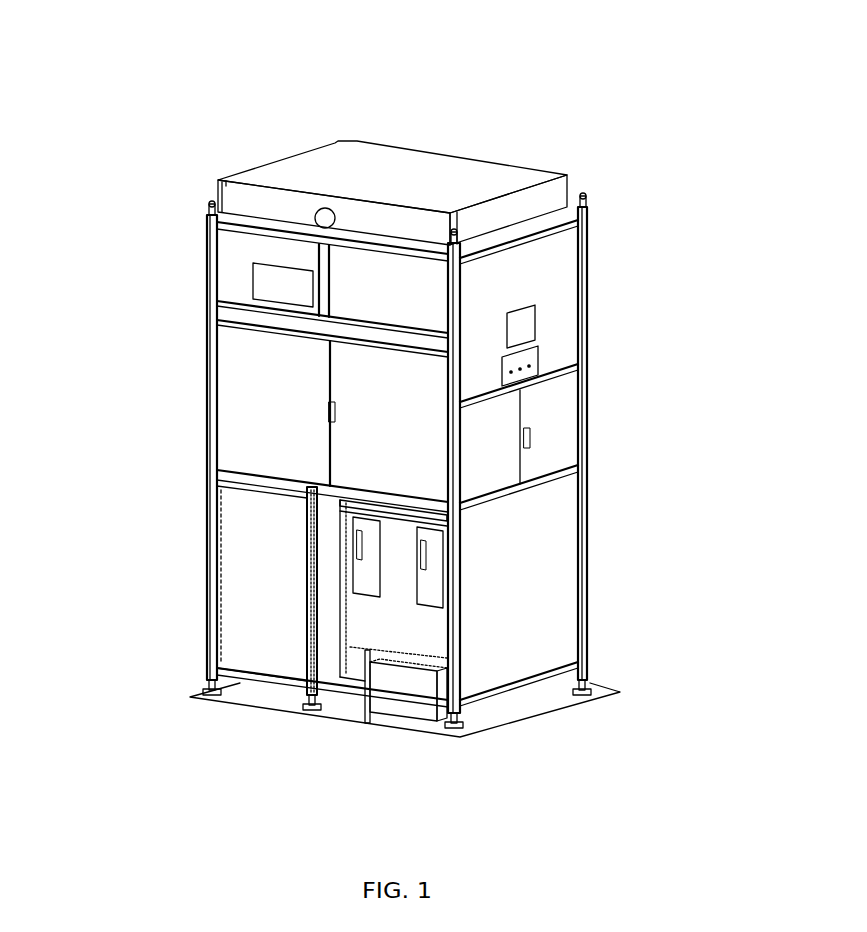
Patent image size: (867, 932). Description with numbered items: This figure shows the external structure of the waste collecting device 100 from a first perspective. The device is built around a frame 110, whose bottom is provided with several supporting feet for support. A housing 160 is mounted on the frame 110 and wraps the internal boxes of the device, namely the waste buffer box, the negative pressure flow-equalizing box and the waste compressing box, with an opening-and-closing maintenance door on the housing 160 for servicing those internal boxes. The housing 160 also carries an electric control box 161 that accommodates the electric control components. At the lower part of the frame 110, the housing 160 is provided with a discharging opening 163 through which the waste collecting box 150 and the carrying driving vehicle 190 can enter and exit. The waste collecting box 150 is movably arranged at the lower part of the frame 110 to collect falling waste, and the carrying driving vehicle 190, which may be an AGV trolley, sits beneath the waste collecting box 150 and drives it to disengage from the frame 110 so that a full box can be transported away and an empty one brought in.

The waste collecting device 100 is at (428, 52).
The frame 110 is at (493, 250).
The housing 160 is at (380, 182).
The electric control box 161 is at (265, 538).
The discharging opening 163 is at (293, 617).
The waste collecting box 150 is at (392, 617).
The carrying driving vehicle 190 is at (412, 698).